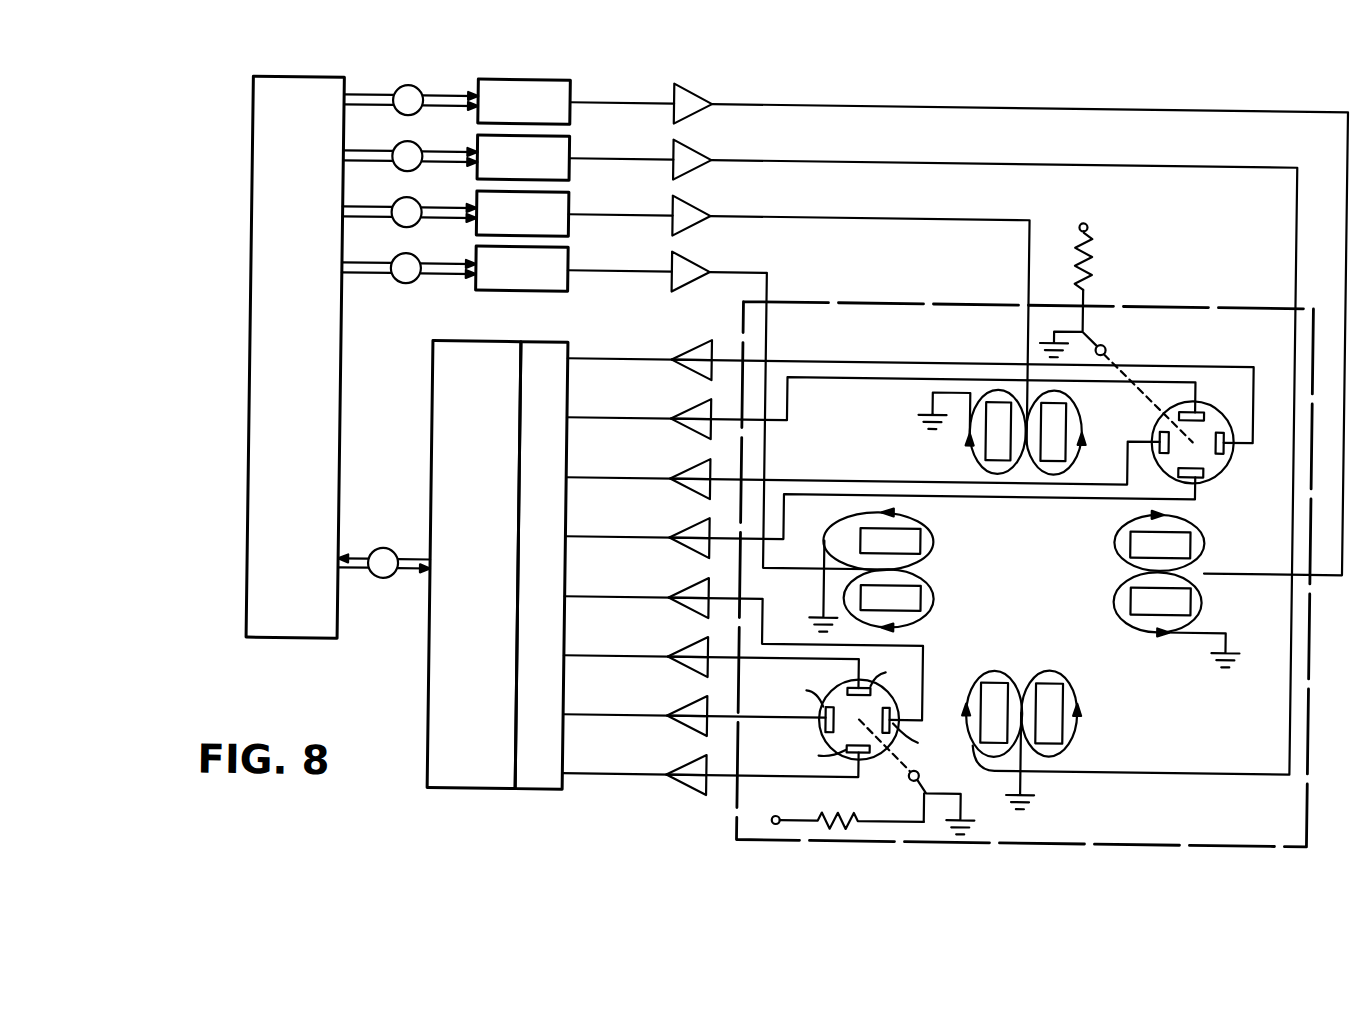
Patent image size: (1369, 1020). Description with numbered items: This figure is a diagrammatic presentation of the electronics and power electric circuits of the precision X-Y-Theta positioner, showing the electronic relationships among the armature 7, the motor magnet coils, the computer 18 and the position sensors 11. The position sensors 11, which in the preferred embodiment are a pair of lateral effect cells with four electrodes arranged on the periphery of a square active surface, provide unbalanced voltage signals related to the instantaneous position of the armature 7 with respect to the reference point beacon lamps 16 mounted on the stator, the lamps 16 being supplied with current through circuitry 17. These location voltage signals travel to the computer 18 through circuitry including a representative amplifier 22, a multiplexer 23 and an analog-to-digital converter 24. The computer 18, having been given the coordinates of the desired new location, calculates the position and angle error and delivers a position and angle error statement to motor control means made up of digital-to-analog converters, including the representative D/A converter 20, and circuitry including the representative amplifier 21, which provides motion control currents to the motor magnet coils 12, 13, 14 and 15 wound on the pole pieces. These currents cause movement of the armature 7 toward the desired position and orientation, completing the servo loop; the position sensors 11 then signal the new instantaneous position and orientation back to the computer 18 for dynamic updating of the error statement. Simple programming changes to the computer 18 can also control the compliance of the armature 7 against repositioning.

The armature 7 is at (1314, 619).
The position sensor 11 is at (1225, 465).
The motor magnet coil 12 is at (1076, 686).
The motor magnet coil 13 is at (1121, 531).
The motor magnet coil 14 is at (1081, 401).
The motor magnet coil 15 is at (934, 522).
The reference point beacon lamp 16 is at (1108, 339).
The circuitry 17 is at (1092, 268).
The computer 18 is at (345, 373).
The D/A converter 20 is at (570, 124).
The amplifier 21 is at (703, 116).
The amplifier 22 is at (690, 345).
The multiplexer 23 is at (548, 344).
The analog-to-digital converter 24 is at (470, 344).